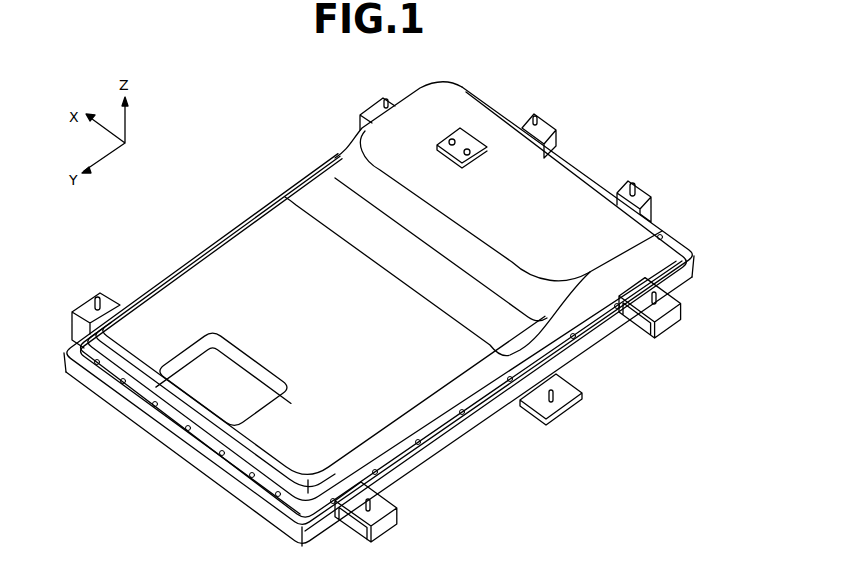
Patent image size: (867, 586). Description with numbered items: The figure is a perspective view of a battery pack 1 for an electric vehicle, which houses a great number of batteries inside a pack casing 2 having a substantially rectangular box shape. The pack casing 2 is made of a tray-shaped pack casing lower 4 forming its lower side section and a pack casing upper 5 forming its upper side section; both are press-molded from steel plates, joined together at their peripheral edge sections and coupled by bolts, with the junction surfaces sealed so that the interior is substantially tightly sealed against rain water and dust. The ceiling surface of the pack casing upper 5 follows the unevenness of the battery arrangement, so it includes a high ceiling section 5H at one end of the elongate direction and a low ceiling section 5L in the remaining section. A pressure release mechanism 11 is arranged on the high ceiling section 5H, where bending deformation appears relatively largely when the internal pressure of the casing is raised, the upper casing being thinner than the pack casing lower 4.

The battery pack 1 is at (252, 197).
The pack casing 2 is at (527, 422).
The pack casing lower 4 is at (438, 450).
The pack casing upper 5 is at (435, 412).
The low ceiling section 5L is at (190, 297).
The high ceiling section 5H is at (555, 182).
The pressure release mechanism 11 is at (481, 129).